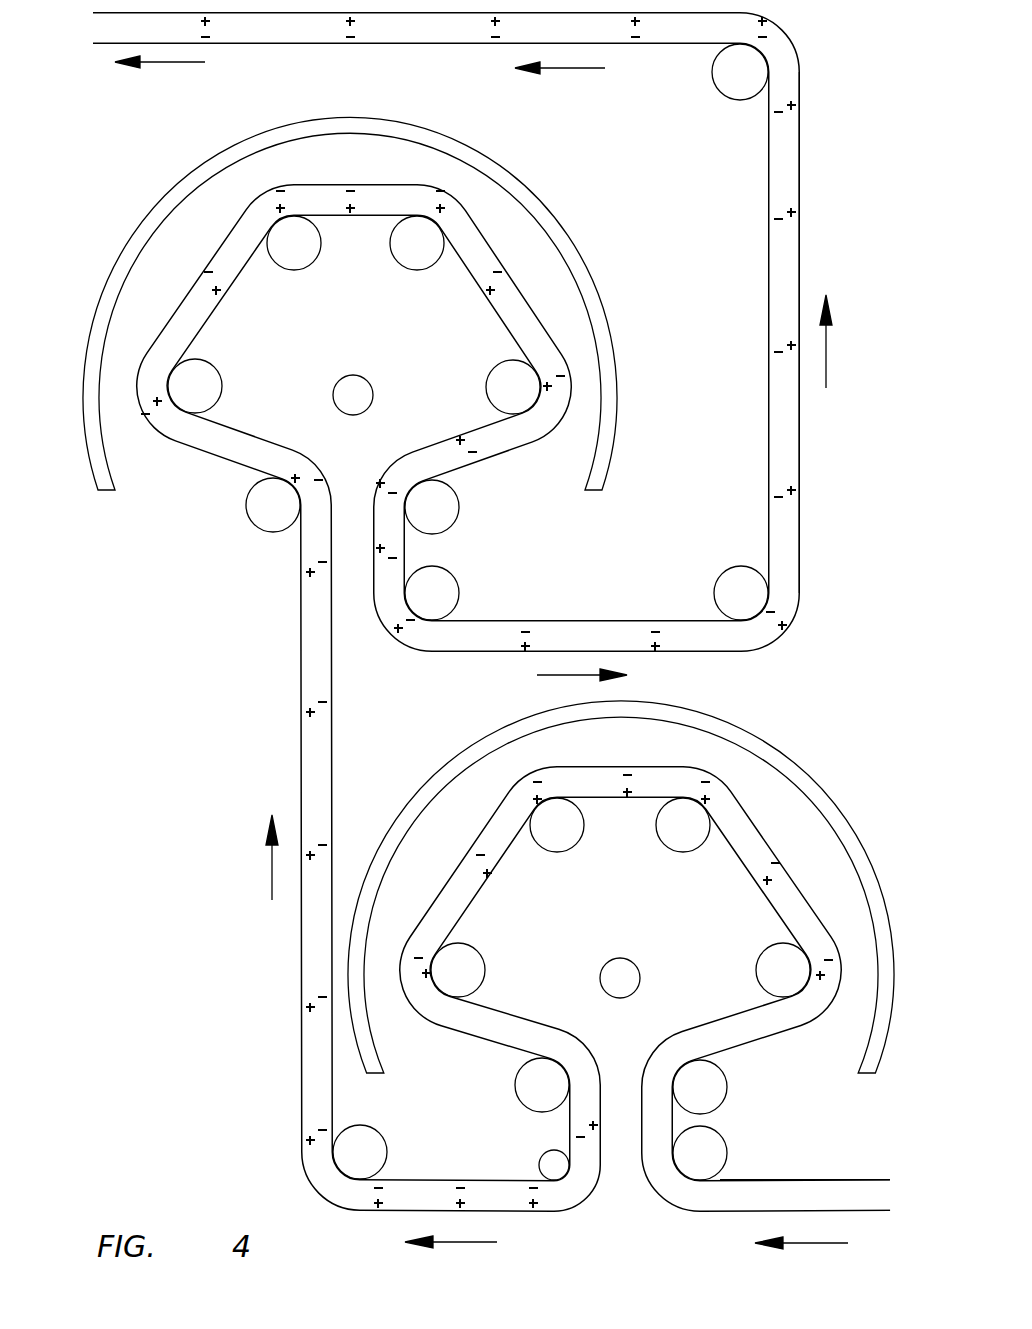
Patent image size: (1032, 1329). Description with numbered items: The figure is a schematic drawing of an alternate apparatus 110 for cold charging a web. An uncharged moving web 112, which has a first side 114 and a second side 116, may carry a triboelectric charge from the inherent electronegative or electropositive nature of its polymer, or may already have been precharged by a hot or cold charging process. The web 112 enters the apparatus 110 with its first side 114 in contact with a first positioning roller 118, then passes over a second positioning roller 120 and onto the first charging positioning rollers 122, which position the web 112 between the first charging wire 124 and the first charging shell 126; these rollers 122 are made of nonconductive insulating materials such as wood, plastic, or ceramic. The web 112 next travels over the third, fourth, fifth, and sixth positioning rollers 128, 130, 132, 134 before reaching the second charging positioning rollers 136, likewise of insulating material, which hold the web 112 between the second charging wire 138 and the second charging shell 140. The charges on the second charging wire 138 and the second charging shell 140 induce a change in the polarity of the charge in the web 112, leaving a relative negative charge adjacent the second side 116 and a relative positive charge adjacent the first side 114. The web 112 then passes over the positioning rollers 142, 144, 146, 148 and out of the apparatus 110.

The apparatus 110 is at (201, 1019).
The web 112 is at (857, 1202).
The first side 114 is at (803, 150).
The second side 116 is at (768, 275).
The first positioning roller 118 is at (727, 1152).
The second positioning roller 120 is at (727, 1085).
The first charging positioning rollers 122 is at (567, 852).
The first charging wire 124 is at (620, 958).
The first charging shell 126 is at (392, 835).
The third positioning roller 128 is at (516, 1085).
The fourth positioning roller 130 is at (539, 1158).
The fifth positioning roller 132 is at (385, 1128).
The sixth positioning roller 134 is at (254, 518).
The second charging positioning rollers 136 is at (292, 270).
The second charging wire 138 is at (353, 375).
The second charging shell 140 is at (588, 262).
The positioning roller 142 is at (459, 507).
The positioning roller 144 is at (459, 582).
The positioning roller 146 is at (722, 570).
The positioning roller 148 is at (722, 93).